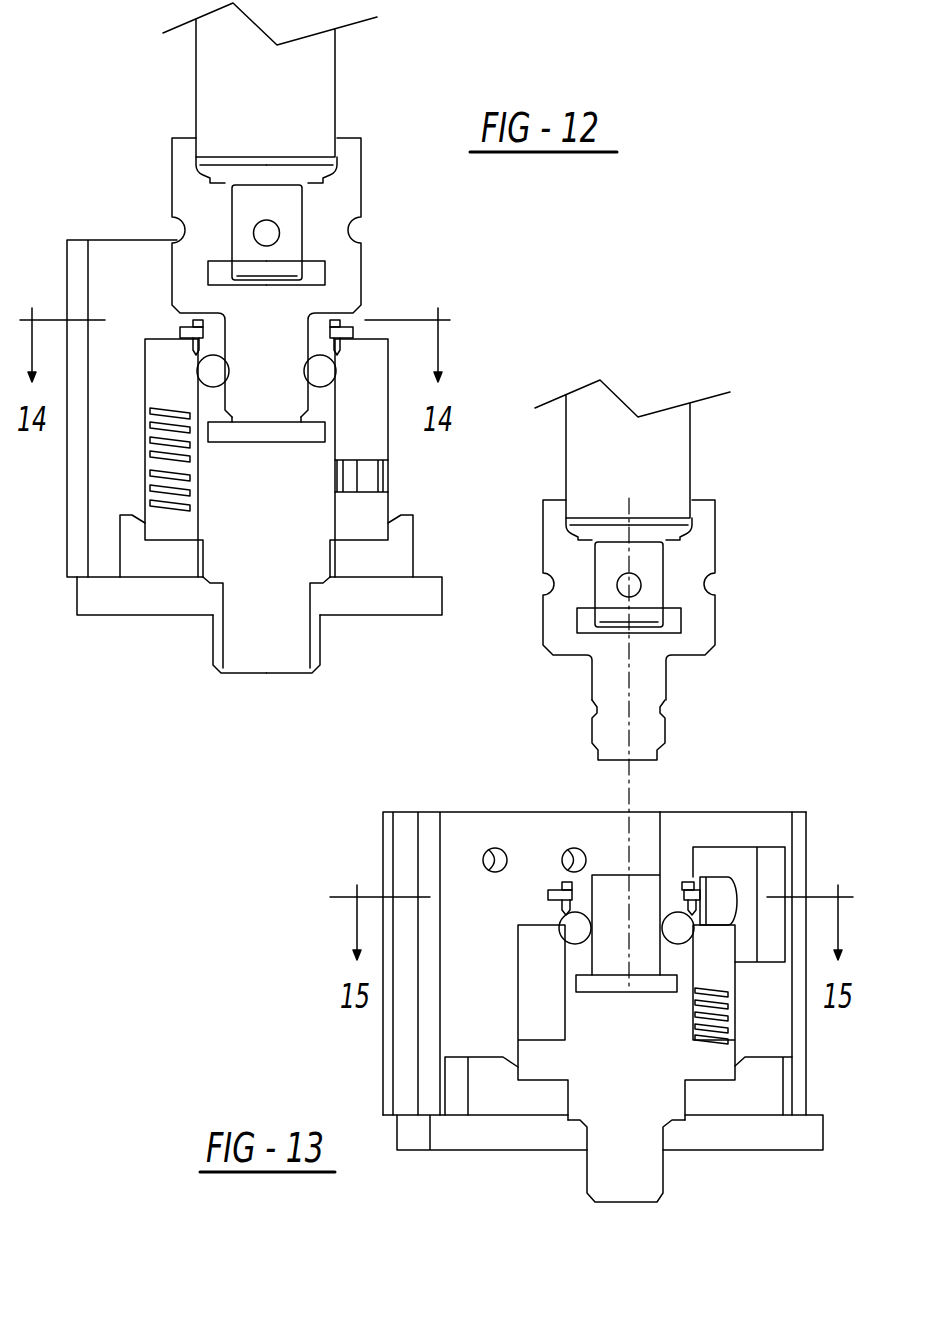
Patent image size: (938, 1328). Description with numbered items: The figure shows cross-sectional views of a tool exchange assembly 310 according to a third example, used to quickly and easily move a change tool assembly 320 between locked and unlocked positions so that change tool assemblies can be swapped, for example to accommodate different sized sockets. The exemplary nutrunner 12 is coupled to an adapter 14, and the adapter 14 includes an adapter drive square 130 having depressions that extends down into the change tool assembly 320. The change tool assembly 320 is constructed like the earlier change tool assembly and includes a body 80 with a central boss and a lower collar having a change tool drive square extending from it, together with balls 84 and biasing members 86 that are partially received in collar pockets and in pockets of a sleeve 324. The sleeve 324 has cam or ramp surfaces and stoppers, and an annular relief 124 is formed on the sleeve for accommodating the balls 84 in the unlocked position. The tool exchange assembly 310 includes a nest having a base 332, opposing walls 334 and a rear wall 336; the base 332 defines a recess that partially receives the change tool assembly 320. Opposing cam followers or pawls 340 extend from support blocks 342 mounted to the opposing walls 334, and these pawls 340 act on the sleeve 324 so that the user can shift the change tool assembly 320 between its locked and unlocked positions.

In FIG. 12, the nutrunner 12 is at (215, 99).
In FIG. 13, the nutrunner 12 is at (673, 452).
In FIG. 12, the adapter 14 is at (348, 262).
In FIG. 13, the adapter 14 is at (705, 519).
In FIG. 12, the adapter drive square 130 is at (288, 338).
In FIG. 13, the adapter drive square 130 is at (650, 672).
In FIG. 12, the balls 84 is at (213, 365).
In FIG. 13, the balls 84 is at (575, 924).
In FIG. 12, the biasing members 86 is at (157, 470).
In FIG. 13, the biasing members 86 is at (733, 1020).
In FIG. 12, the body 80 is at (260, 515).
In FIG. 13, the body 80 is at (633, 1150).
In FIG. 13, the annular relief 124 is at (687, 928).
In FIG. 12, the tool exchange assembly 310 is at (42, 592).
In FIG. 13, the tool exchange assembly 310 is at (840, 1152).
In FIG. 12, the change tool assembly 320 is at (122, 393).
In FIG. 12, the sleeve 324 is at (363, 423).
In FIG. 13, the sleeve 324 is at (540, 985).
In FIG. 12, the base 332 is at (158, 558).
In FIG. 13, the base 332 is at (490, 1092).
In FIG. 13, the opposing walls 334 is at (695, 825).
In FIG. 13, the rear wall 336 is at (517, 827).
In FIG. 13, the cam followers or pawls 340 is at (718, 895).
In FIG. 13, the support blocks 342 is at (735, 885).